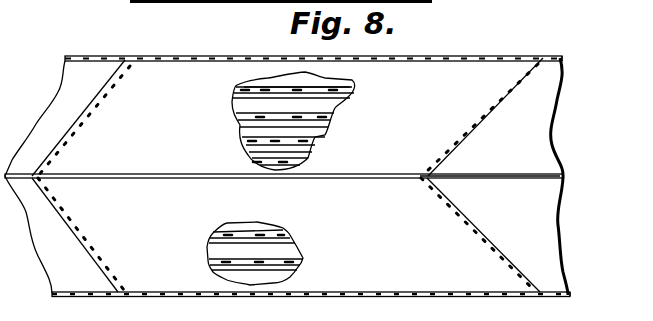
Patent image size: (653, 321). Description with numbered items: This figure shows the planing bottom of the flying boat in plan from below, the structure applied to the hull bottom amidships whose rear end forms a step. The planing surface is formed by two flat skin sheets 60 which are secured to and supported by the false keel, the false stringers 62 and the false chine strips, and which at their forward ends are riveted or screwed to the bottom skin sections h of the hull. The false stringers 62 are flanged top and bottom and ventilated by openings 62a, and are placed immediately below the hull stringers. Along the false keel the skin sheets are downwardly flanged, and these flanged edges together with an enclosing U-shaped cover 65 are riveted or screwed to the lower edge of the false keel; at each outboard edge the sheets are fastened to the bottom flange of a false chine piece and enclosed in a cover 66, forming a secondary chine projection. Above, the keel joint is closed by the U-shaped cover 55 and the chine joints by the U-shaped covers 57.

The U-shaped cover 55 is at (498, 175).
The U-shaped cover 57 is at (556, 56).
The skin sheet 60 is at (407, 100).
The false stringer 62 is at (313, 113).
The openings 62a is at (271, 118).
The U-shaped cover 65 is at (236, 0).
The cover 66 is at (181, 57).
The bottom skin section h is at (533, 103).